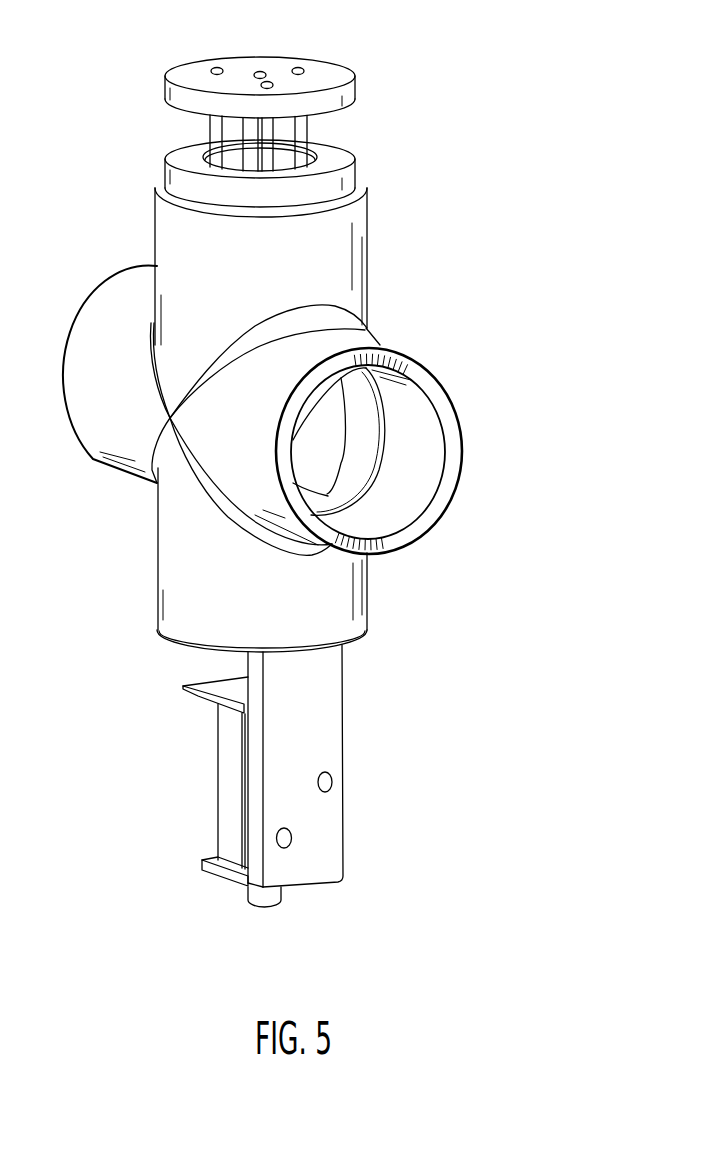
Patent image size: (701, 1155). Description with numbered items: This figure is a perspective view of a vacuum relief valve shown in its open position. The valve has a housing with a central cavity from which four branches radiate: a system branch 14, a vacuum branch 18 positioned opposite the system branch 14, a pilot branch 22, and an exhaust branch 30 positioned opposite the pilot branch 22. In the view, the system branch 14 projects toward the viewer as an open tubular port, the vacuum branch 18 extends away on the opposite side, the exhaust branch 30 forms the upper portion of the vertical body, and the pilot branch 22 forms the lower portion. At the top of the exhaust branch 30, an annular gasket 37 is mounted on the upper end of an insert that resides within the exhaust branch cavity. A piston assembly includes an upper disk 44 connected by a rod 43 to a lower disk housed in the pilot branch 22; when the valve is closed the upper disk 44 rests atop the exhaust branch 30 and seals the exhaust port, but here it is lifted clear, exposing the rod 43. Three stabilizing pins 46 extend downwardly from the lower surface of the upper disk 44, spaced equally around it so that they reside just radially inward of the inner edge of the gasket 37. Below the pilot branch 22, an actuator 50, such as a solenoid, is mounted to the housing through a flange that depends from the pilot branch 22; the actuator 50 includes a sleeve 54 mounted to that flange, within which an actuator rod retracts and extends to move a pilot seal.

The system branch 14 is at (352, 346).
The vacuum branch 18 is at (107, 312).
The pilot branch 22 is at (185, 585).
The exhaust branch 30 is at (338, 257).
The annular gasket 37 is at (333, 162).
The rod 43 is at (250, 160).
The upper disk 44 is at (343, 97).
The stabilizing pins 46 is at (218, 128).
The actuator 50 is at (216, 900).
The sleeve 54 is at (233, 785).